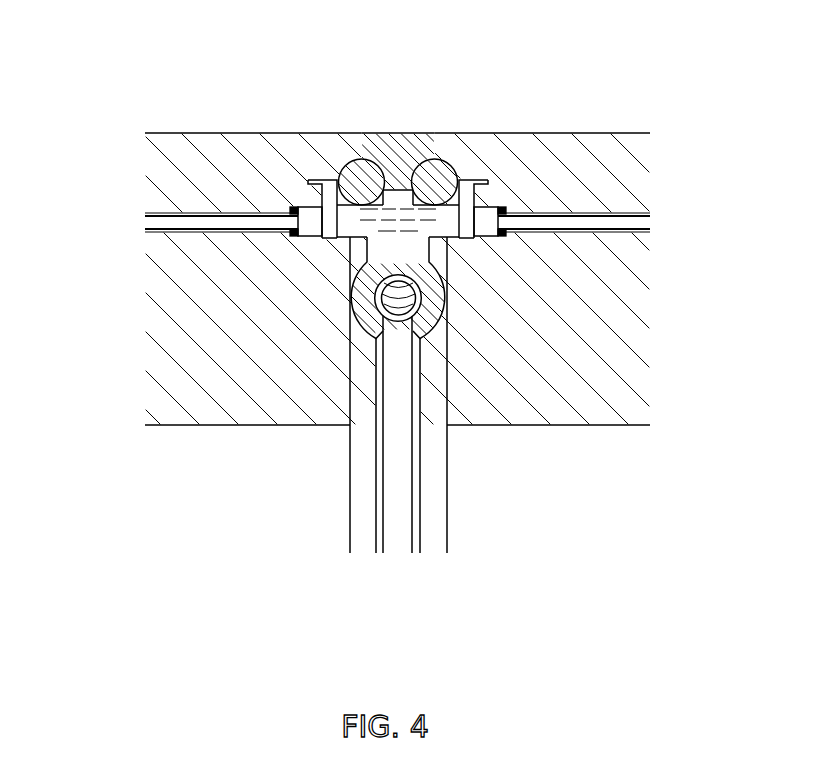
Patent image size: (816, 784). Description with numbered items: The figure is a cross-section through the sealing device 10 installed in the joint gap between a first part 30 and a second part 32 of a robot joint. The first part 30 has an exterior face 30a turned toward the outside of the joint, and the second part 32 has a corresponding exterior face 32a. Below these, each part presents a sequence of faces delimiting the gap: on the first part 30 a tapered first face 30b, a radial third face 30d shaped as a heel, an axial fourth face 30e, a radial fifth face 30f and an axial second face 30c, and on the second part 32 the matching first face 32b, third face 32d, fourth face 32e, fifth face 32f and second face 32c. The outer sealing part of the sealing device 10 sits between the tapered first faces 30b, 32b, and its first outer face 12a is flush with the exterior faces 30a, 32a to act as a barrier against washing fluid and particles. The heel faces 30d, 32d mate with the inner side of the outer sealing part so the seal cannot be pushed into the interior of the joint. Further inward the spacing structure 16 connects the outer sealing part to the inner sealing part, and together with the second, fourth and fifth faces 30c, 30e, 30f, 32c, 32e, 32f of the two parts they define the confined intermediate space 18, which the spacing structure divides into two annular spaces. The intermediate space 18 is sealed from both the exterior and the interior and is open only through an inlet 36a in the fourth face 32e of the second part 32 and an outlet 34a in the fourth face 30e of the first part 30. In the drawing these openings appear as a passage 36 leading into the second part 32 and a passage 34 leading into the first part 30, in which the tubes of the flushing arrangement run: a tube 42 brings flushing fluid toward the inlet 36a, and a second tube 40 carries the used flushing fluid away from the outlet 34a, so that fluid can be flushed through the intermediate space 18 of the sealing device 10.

The sealing device 10 is at (412, 146).
The first outer face 12a is at (388, 133).
The spacing structure 16 is at (390, 228).
The intermediate space 18 is at (433, 243).
The first part 30 is at (153, 133).
The exterior face 30a is at (212, 133).
The first face 30b is at (337, 159).
The second face 30c is at (352, 367).
The third face 30d is at (317, 178).
The fourth face 30e is at (326, 196).
The fifth face 30f is at (341, 240).
The second part 32 is at (618, 158).
The exterior face 32a is at (555, 133).
The first face 32b is at (464, 155).
The second face 32c is at (442, 375).
The third face 32d is at (478, 180).
The fourth face 32e is at (470, 196).
The fifth face 32f is at (455, 240).
The first plate 34 is at (157, 223).
The outlet 34a is at (299, 207).
The second plate 36 is at (645, 223).
The inlet 36a is at (489, 207).
The second tube 40 is at (167, 215).
The tube 42 is at (625, 232).